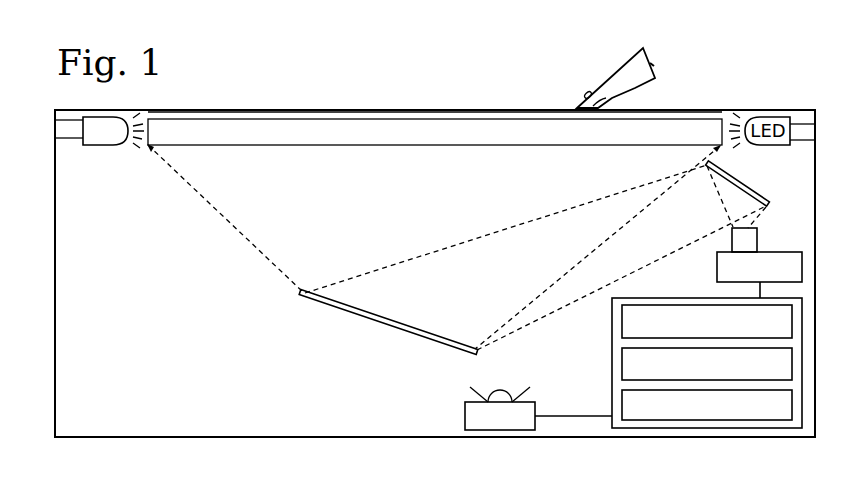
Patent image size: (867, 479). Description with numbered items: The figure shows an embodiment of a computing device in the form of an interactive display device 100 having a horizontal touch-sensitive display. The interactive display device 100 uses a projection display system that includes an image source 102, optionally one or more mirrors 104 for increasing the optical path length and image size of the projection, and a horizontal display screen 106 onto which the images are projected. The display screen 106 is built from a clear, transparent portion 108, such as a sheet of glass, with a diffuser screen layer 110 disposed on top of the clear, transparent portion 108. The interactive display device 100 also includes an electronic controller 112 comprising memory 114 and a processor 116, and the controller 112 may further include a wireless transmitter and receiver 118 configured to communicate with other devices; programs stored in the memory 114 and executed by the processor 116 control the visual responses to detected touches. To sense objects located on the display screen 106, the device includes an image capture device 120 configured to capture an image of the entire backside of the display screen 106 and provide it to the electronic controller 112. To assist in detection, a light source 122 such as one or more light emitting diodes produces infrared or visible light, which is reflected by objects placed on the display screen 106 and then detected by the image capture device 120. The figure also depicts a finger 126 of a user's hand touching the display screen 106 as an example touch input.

The interactive display device 100 is at (461, 49).
The image source 102 is at (742, 278).
The mirror 104 is at (747, 182).
The display screen 106 is at (278, 109).
The clear, transparent portion 108 is at (398, 137).
The diffuser screen layer 110 is at (385, 112).
The electronic controller 112 is at (660, 298).
The memory 114 is at (622, 322).
The processor 116 is at (622, 370).
The wireless transmitter and receiver 118 is at (622, 405).
The image capture device 120 is at (482, 427).
The light source 122 is at (99, 146).
The finger 126 is at (627, 61).